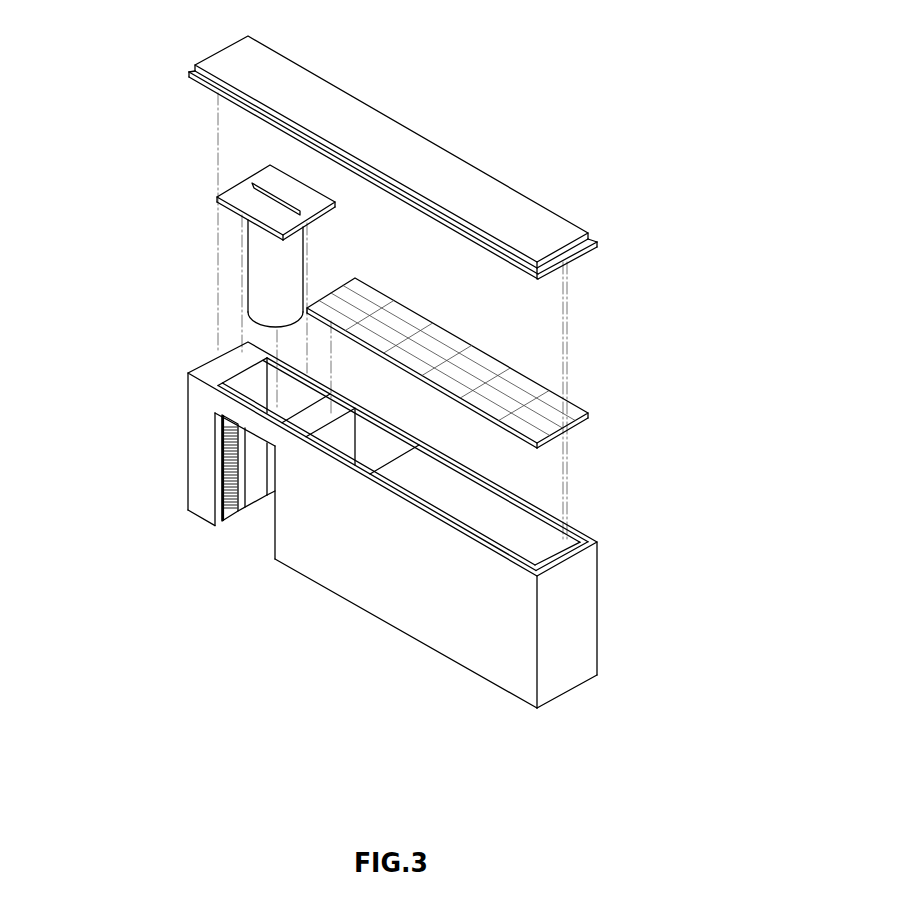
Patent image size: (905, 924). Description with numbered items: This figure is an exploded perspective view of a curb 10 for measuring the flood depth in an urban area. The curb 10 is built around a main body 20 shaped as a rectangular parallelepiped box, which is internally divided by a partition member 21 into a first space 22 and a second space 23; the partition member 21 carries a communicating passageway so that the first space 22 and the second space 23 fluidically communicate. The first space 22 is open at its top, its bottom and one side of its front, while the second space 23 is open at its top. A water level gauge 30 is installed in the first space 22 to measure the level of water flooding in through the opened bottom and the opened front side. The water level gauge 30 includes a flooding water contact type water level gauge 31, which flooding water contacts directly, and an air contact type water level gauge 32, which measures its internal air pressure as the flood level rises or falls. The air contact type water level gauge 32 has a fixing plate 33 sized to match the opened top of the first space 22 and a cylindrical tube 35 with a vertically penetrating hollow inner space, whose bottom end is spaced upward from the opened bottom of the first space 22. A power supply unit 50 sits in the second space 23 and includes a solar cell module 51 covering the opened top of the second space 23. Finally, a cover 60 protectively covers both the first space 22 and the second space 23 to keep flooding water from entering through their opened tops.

The curb 10 is at (67, 48).
The main body 20 is at (392, 525).
The partition member 21 is at (345, 442).
The first space 22 is at (300, 410).
The second space 23 is at (443, 496).
The water level gauge 30 is at (181, 404).
The flooding water contact type water level gauge 31 is at (237, 522).
The air contact type water level gauge 32 is at (234, 230).
The fixing plate 33 is at (243, 192).
The cylindrical tube 35 is at (258, 285).
The power supply unit 50 is at (524, 363).
The solar cell module 51 is at (547, 397).
The cover 60 is at (477, 157).